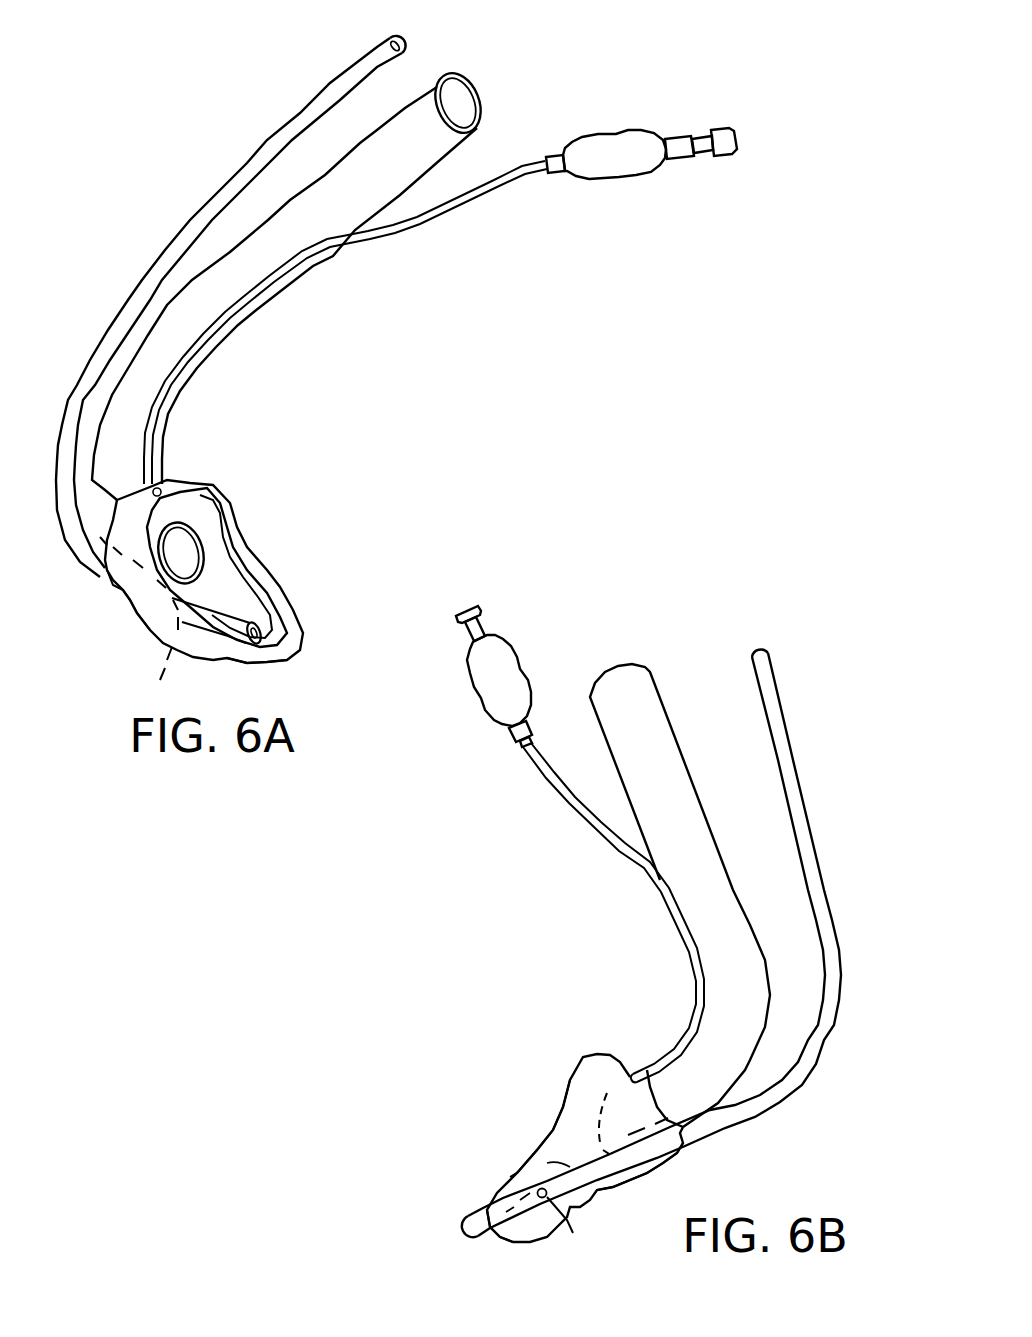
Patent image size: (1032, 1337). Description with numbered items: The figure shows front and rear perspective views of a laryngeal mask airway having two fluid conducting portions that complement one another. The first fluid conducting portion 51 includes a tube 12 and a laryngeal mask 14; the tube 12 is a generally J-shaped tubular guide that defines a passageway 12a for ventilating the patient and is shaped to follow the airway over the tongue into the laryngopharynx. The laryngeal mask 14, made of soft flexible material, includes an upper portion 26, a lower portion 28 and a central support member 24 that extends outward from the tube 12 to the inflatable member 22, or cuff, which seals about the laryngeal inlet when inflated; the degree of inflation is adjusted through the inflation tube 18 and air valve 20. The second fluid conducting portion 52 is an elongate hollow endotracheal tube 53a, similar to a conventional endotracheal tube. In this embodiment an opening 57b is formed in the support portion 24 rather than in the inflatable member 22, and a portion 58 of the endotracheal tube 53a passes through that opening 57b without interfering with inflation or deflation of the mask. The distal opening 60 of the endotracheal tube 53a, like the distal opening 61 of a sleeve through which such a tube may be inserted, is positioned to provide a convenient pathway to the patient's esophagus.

In FIG. 6A, the first fluid conducting portion 51 is at (227, 369).
In FIG. 6B, the first fluid conducting portion 51 is at (616, 1006).
In FIG. 6A, the second fluid conducting portion 52 is at (221, 151).
In FIG. 6B, the second fluid conducting portion 52 is at (802, 721).
In FIG. 6A, the endotracheal tube 53a is at (300, 108).
In FIG. 6B, the endotracheal tube 53a is at (807, 816).
In FIG. 6A, the tubular guide 12 is at (329, 256).
In FIG. 6B, the tubular guide 12 is at (645, 702).
In FIG. 6A, the passageway 12a is at (455, 92).
In FIG. 6A, the laryngeal mask 14 is at (224, 549).
In FIG. 6B, the laryngeal mask 14 is at (587, 1137).
In FIG. 6B, the inflation tube 18 is at (570, 797).
In FIG. 6B, the air valve 20 is at (525, 666).
In FIG. 6B, the inflatable member 22 is at (547, 1147).
In FIG. 6A, the central support member 24 is at (223, 590).
In FIG. 6B, the central support member 24 is at (617, 1178).
In FIG. 6A, the upper portion 26 is at (183, 484).
In FIG. 6A, the lower portion 28 is at (248, 664).
In FIG. 6B, the lower portion 28 is at (510, 1242).
In FIG. 6A, the opening 57b is at (139, 621).
In FIG. 6B, the opening 57b is at (567, 1220).
In FIG. 6A, the portion of the endotracheal tube 58 is at (622, 174).
In FIG. 6A, the distal opening 60 is at (433, 223).
In FIG. 6A, the distal opening 61 is at (137, 613).